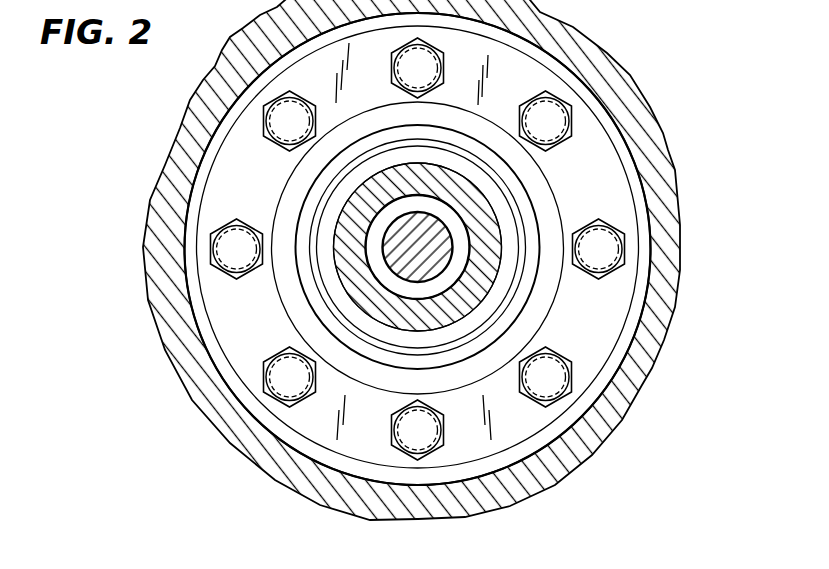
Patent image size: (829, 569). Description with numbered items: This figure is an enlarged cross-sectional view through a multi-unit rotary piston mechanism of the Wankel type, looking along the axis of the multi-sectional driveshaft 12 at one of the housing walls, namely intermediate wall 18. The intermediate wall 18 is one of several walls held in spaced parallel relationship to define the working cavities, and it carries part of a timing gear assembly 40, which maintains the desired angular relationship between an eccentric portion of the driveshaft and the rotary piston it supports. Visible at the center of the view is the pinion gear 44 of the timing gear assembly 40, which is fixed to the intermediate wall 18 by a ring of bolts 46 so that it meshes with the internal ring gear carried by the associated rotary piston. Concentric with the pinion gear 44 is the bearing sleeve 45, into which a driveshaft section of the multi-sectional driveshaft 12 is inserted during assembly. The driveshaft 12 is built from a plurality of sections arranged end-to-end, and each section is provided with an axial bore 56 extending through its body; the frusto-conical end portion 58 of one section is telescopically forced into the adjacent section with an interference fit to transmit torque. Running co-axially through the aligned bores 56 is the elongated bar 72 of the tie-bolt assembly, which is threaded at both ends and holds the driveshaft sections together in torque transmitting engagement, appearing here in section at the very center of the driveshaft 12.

The multi-sectional driveshaft 12 is at (502, 210).
The intermediate wall 18 is at (642, 374).
The timing gear assembly 40 is at (648, 176).
The pinion gear 44 is at (608, 324).
The bearing sleeve 45 is at (333, 265).
The bolts 46 is at (284, 146).
The axial bore 56 is at (395, 289).
The end portion 58 is at (440, 313).
The elongated bar 72 is at (430, 244).